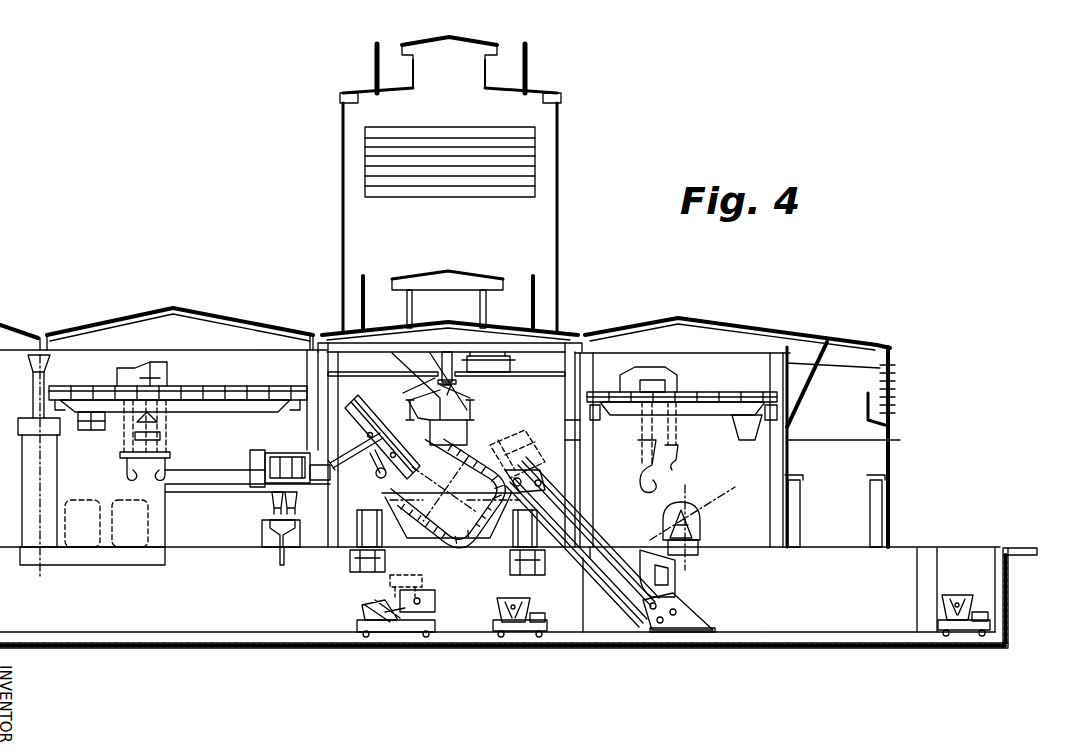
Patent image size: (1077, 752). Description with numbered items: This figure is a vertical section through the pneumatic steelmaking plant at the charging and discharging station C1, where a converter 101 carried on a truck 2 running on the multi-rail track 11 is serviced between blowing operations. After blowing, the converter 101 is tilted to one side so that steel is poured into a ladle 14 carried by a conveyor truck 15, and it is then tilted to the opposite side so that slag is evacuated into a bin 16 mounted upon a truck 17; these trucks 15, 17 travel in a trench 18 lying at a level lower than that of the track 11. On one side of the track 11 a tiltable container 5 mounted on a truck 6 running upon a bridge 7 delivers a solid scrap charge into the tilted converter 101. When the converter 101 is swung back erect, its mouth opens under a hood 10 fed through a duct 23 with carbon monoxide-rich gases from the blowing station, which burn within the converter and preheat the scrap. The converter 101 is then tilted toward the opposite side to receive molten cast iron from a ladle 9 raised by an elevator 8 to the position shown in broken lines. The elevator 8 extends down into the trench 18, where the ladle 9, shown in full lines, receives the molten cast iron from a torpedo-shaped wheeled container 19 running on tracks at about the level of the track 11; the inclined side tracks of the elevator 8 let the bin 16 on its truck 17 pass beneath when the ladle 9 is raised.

The truck 2 is at (370, 512).
The tiltable container 5 is at (365, 412).
The truck 6 is at (340, 482).
The bridge 7 is at (215, 490).
The elevator 8 is at (598, 538).
The ladle 9 is at (535, 440).
The hood 10 is at (440, 437).
The multi-rail track 11 is at (362, 560).
The ladle 14 is at (428, 592).
The conveyor truck 15 is at (428, 625).
The bin 16 is at (505, 598).
The truck 17 is at (545, 619).
The trench 18 is at (905, 565).
The torpedo-shaped wheeled container 19 is at (695, 508).
The duct 23 is at (412, 355).
The converter 101 is at (452, 537).
The charging and discharging station C1 is at (462, 460).